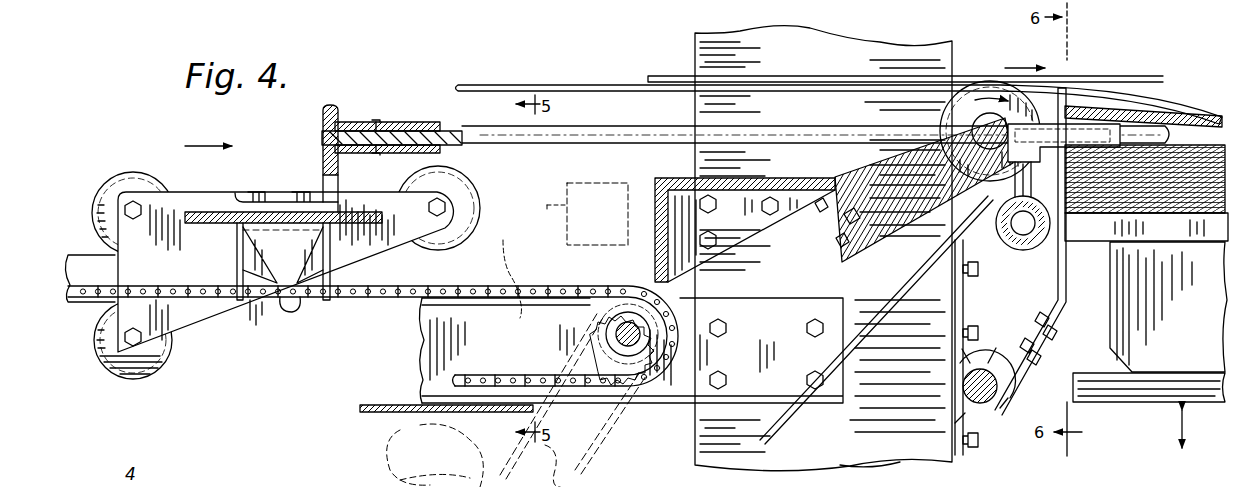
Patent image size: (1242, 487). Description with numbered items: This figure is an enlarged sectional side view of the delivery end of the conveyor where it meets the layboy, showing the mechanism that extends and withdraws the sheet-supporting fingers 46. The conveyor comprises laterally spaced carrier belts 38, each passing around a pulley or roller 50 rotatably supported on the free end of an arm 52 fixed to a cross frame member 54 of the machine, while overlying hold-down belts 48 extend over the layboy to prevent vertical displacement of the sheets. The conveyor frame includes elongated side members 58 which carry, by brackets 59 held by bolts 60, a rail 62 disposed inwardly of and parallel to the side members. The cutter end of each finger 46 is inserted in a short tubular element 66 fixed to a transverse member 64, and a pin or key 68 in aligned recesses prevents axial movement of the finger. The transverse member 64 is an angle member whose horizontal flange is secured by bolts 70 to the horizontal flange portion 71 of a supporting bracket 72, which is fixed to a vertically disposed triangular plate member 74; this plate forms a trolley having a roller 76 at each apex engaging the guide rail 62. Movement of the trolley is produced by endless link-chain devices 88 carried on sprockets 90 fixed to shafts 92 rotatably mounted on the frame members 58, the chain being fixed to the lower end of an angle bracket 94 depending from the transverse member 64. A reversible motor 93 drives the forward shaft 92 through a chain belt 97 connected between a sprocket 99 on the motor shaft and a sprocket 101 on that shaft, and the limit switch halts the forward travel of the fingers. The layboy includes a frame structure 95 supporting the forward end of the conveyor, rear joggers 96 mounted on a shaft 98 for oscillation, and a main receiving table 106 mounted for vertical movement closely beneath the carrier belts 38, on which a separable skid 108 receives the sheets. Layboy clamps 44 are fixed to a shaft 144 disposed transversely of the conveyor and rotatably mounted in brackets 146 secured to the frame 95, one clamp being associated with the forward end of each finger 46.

The carrier belts 38 is at (496, 85).
The layboy clamps 44 is at (1043, 150).
The fingers 46 is at (733, 126).
The hold-down belts 48 is at (725, 77).
The pulley or roller 50 is at (940, 106).
The arm 52 is at (940, 235).
The cross frame member 54 is at (765, 178).
The side members 58 is at (795, 425).
The brackets 59 is at (503, 240).
The bolts 60 is at (508, 305).
The rail 62 is at (510, 252).
The transverse member 64 is at (323, 124).
The tubular element 66 is at (398, 122).
The pin or key 68 is at (376, 120).
The bolts 70 is at (258, 192).
The horizontal flange portion 71 is at (212, 223).
The supporting bracket 72 is at (236, 262).
The triangular plate member 74 is at (370, 268).
The roller 76 is at (143, 180).
The endless link-chain devices 88 is at (489, 375).
The sprockets 90 is at (600, 350).
The shafts 92 is at (628, 346).
The reversible motor 93 is at (408, 455).
The angle bracket 94 is at (293, 312).
The frame structure 95 is at (885, 463).
The rear joggers 96 is at (1067, 290).
The chain belt 97 is at (580, 412).
The shaft 98 is at (998, 420).
The sprocket 99 is at (462, 470).
The sprocket 101 is at (608, 343).
The main receiving table 106 is at (1138, 405).
The separable support or skid 108 is at (1162, 342).
The shaft 144 is at (985, 270).
The brackets 146 is at (982, 290).